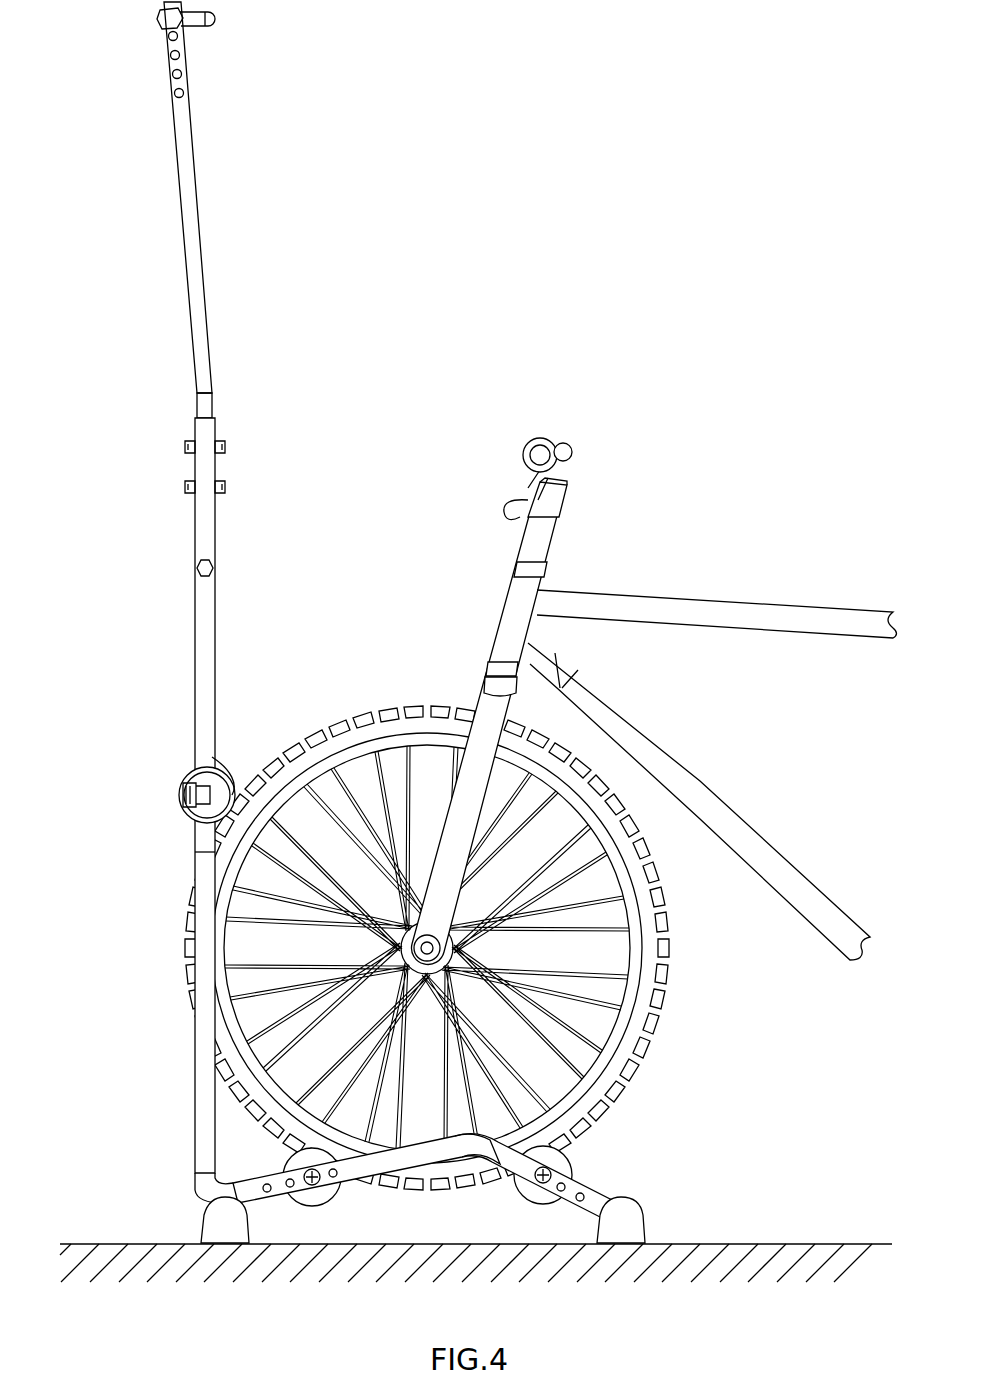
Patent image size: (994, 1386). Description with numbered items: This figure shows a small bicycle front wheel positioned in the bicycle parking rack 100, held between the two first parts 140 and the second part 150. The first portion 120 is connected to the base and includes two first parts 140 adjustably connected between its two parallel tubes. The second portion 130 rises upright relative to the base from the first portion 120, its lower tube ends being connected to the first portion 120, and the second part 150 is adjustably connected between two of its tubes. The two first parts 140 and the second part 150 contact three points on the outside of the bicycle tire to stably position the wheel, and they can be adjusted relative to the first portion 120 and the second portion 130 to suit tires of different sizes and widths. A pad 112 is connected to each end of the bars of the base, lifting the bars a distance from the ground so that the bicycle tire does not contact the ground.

The bicycle parking rack 100 is at (288, 440).
The second portion 130 is at (182, 676).
The second part 150 is at (212, 757).
The first parts 140 is at (290, 1167).
The first portion 120 is at (432, 1140).
The pad 112 is at (216, 1222).